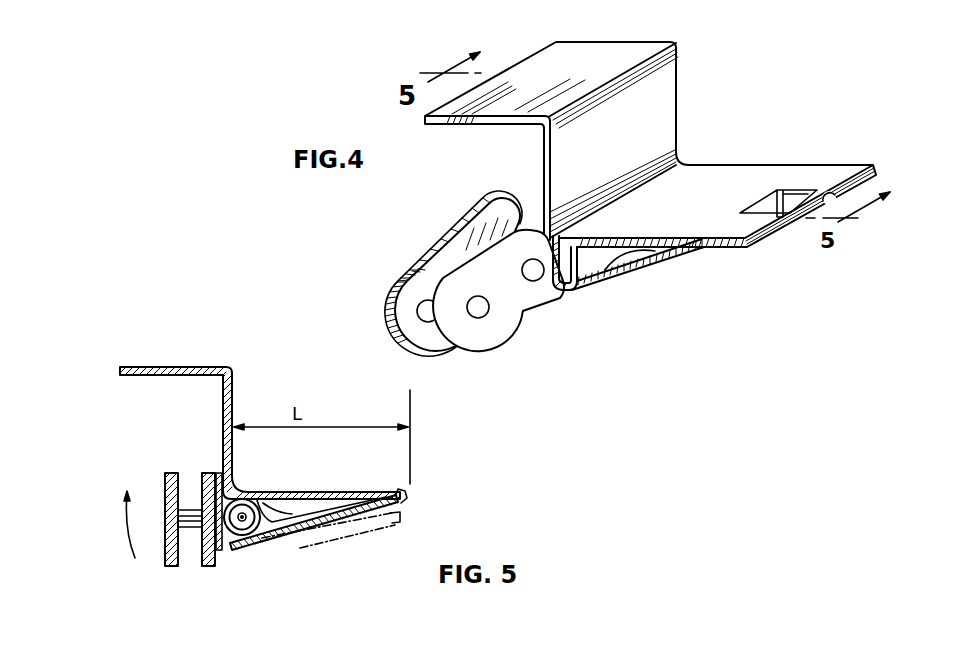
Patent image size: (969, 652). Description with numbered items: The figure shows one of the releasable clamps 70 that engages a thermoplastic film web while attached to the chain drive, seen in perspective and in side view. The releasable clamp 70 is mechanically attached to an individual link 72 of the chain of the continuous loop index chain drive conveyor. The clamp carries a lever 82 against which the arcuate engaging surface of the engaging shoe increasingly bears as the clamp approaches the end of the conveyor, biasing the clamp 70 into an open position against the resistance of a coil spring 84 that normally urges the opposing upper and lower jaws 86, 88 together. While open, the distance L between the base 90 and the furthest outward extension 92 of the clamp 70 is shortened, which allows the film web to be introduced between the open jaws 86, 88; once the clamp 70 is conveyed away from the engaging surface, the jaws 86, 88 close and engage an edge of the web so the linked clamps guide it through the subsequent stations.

In FIG. 4, the releasable clamp 70 is at (692, 132).
In FIG. 5, the releasable clamp 70 is at (158, 423).
In FIG. 4, the link 72 is at (470, 334).
In FIG. 5, the link 72 is at (165, 477).
In FIG. 4, the lever 82 is at (594, 60).
In FIG. 5, the lever 82 is at (193, 366).
In FIG. 5, the coil spring 84 is at (221, 551).
In FIG. 4, the upper jaw 86 is at (784, 175).
In FIG. 5, the upper jaw 86 is at (312, 492).
In FIG. 4, the lower jaw 88 is at (631, 274).
In FIG. 5, the lower jaw 88 is at (306, 528).
In FIG. 5, the base 90 is at (228, 543).
In FIG. 5, the furthest outward extension 92 is at (406, 494).